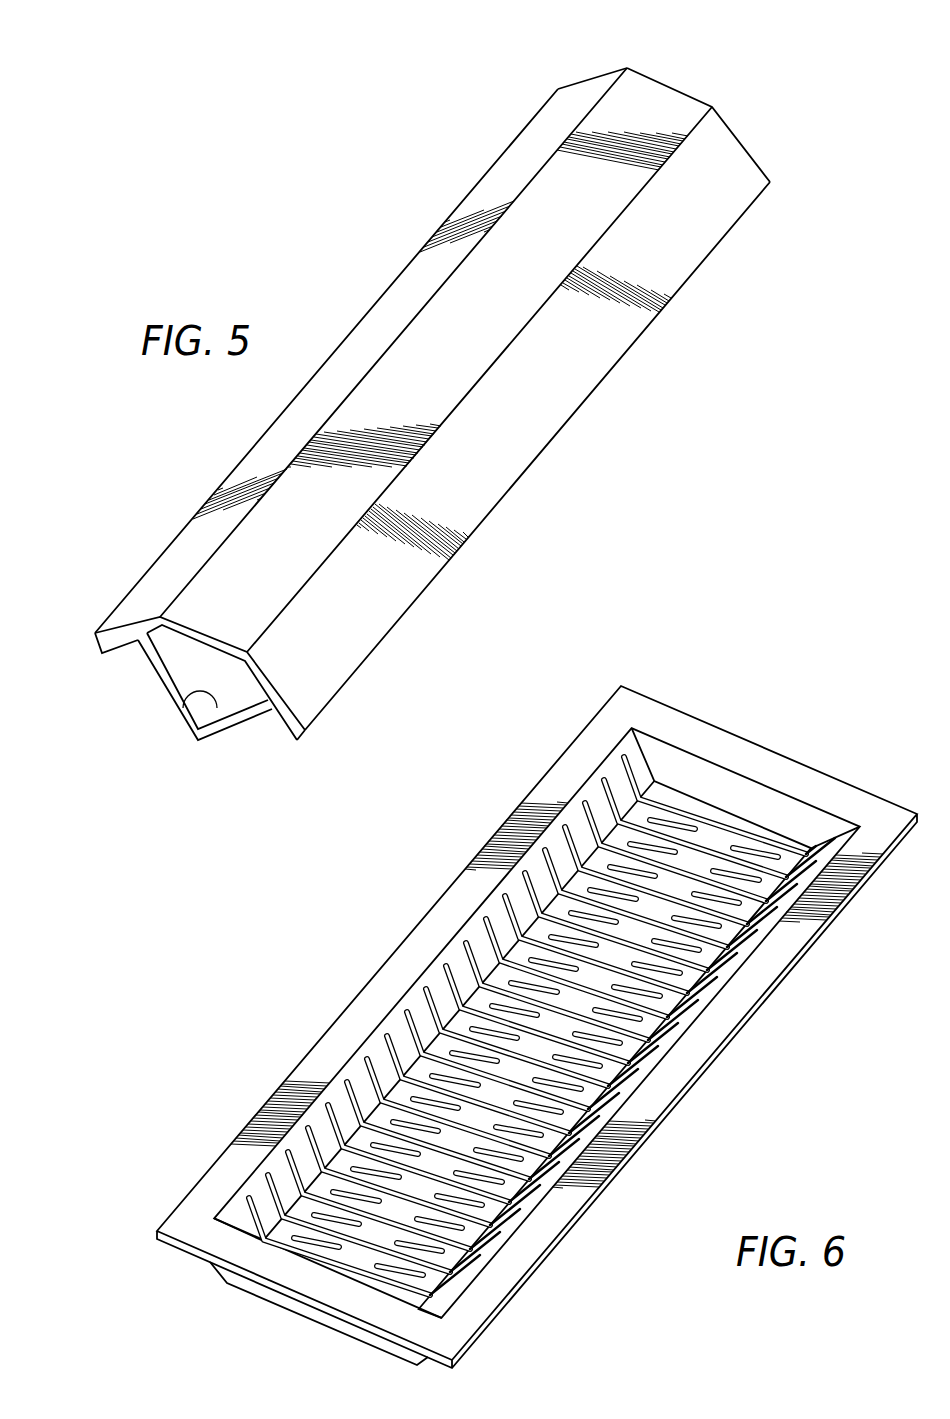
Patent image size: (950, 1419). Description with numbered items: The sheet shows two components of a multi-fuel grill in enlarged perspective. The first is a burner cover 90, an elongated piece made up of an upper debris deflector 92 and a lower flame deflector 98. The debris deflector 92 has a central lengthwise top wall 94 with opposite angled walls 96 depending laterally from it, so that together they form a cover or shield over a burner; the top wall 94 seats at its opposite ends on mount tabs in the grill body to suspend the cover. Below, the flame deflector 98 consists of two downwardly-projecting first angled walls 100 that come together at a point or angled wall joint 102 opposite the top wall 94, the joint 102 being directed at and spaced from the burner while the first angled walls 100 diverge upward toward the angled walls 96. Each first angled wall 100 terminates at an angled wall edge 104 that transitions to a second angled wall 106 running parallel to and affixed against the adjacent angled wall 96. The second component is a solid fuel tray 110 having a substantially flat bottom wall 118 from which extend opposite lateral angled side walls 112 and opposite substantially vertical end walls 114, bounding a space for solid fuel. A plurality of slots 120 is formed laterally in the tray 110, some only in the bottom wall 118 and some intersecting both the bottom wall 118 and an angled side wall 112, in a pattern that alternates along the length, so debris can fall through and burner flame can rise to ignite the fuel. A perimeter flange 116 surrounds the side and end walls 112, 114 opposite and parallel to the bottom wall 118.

In FIG. 5, the burner cover 90 is at (664, 428).
In FIG. 5, the upper debris deflector 92 is at (760, 82).
In FIG. 5, the central lengthwise top wall 94 is at (638, 118).
In FIG. 5, the angled walls 96 is at (490, 191).
In FIG. 5, the lower flame deflector 98 is at (177, 739).
In FIG. 5, the first angled walls 100 is at (162, 685).
In FIG. 5, the angled wall joint 102 is at (183, 708).
In FIG. 5, the angled wall edges 104 is at (137, 643).
In FIG. 5, the second angled walls 106 is at (103, 652).
In FIG. 6, the solid fuel tray 110 is at (488, 1006).
In FIG. 6, the angled side walls 112 is at (449, 964).
In FIG. 6, the end walls 114 is at (727, 787).
In FIG. 6, the perimeter flange 116 is at (780, 768).
In FIG. 6, the bottom wall 118 is at (553, 1030).
In FIG. 6, the slots 120 is at (305, 1143).